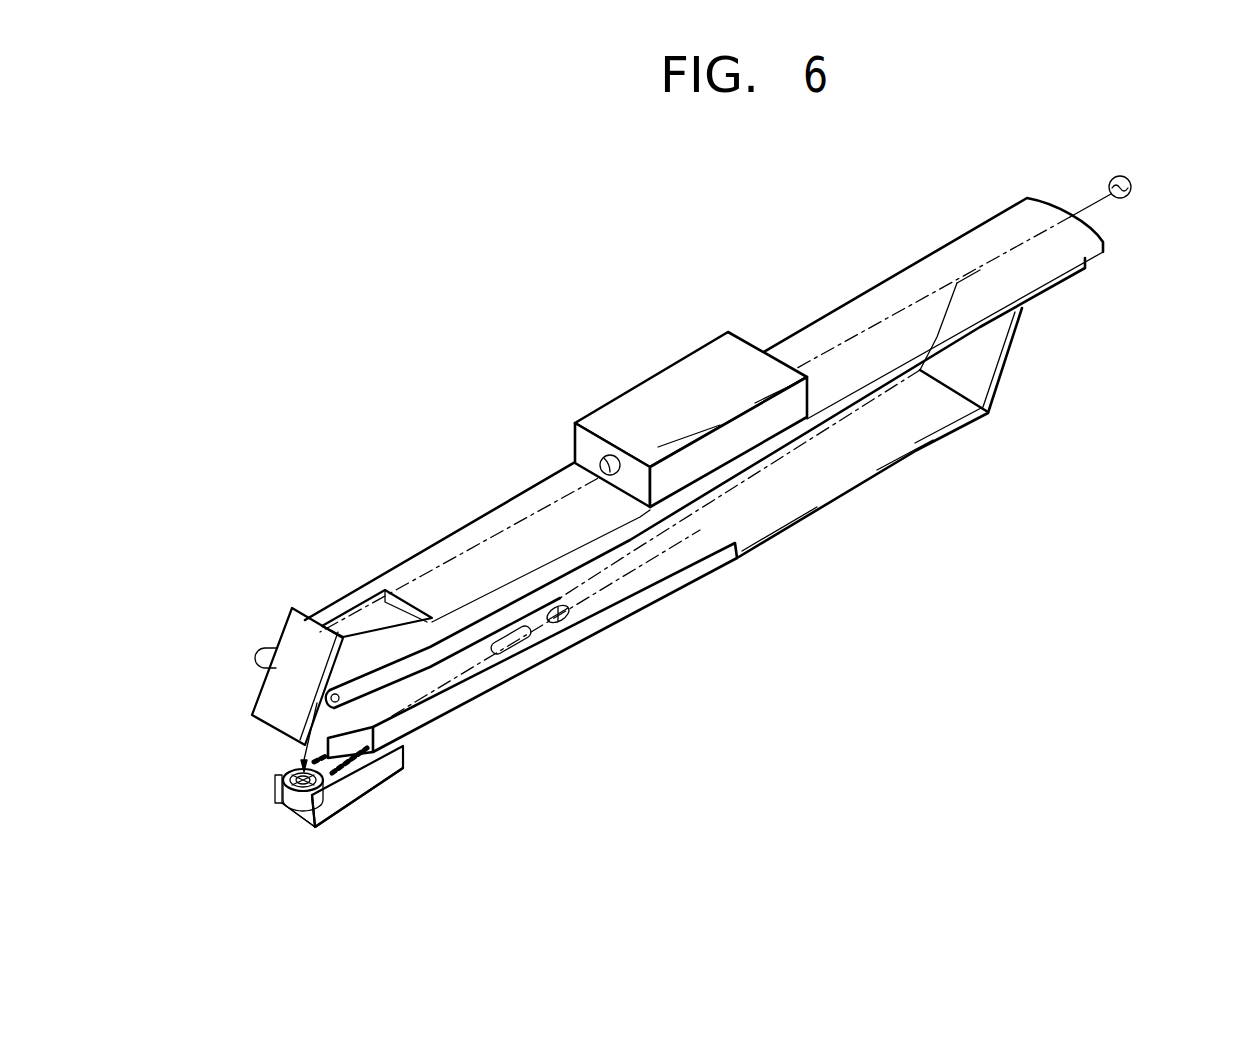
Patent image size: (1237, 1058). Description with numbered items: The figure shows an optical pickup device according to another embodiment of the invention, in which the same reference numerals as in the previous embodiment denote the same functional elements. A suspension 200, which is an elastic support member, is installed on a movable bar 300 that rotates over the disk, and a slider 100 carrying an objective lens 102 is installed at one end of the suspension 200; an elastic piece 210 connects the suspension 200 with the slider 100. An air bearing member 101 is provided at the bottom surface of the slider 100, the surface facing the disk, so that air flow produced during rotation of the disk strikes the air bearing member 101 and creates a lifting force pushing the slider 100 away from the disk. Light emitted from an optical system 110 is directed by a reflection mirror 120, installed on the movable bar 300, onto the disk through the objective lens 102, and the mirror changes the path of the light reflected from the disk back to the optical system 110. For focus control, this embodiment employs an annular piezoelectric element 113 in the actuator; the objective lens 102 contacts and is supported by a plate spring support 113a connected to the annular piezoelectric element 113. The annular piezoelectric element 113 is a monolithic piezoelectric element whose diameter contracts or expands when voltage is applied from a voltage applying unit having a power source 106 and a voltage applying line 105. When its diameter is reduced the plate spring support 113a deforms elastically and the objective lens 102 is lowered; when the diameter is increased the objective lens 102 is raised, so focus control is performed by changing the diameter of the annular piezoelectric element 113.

The slider 100 is at (377, 781).
The air bearing member 101 is at (333, 813).
The objective lens 102 is at (287, 805).
The voltage applying line 105 is at (1070, 213).
The power source 106 is at (1130, 181).
The optical system 110 is at (642, 400).
The annular piezoelectric element 113 is at (284, 772).
The plate spring support 113a is at (303, 797).
The reflection mirror 120 is at (272, 695).
The suspension 200 is at (936, 442).
The elastic piece 210 is at (392, 752).
The movable bar 300 is at (850, 328).